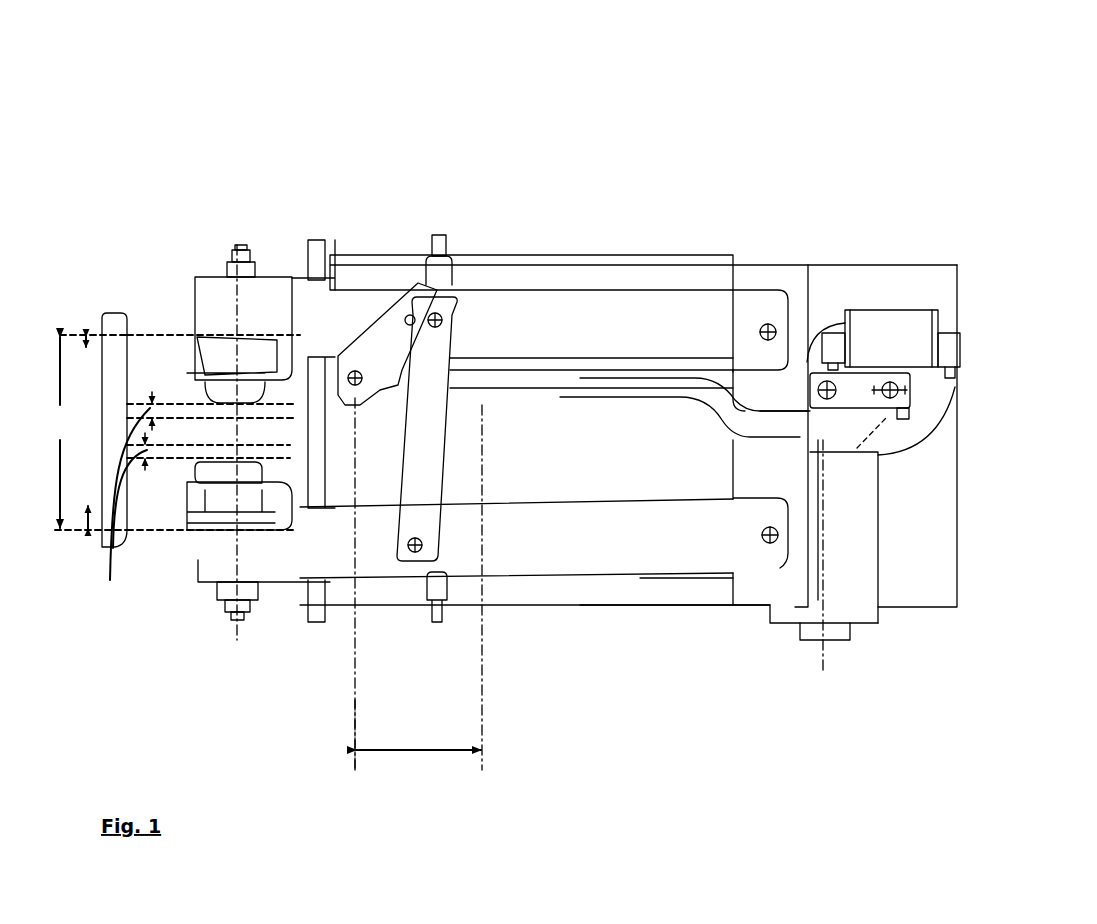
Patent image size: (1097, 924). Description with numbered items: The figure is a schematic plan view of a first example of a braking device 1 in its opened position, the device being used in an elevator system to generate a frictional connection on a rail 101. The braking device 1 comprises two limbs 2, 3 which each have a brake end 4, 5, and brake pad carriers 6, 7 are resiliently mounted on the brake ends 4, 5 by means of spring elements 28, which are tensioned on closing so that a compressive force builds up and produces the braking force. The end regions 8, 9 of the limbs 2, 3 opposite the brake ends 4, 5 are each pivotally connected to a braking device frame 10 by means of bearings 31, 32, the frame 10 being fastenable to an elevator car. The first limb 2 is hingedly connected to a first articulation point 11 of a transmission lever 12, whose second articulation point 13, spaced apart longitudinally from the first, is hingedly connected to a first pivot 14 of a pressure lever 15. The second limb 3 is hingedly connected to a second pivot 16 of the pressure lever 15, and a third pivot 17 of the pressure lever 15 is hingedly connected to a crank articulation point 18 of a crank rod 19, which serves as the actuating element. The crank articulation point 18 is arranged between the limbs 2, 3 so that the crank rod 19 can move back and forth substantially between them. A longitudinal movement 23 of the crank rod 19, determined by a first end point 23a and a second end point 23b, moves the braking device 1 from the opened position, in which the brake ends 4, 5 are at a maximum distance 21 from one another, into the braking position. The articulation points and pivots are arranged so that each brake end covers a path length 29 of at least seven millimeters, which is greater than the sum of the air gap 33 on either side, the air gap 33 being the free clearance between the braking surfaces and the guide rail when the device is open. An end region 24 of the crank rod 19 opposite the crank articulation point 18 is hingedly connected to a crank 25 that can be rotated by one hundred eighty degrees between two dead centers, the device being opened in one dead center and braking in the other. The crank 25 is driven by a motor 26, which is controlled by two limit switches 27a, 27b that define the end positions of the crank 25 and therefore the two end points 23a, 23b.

The braking device 1 is at (238, 85).
The first limb 2 is at (611, 540).
The second limb 3 is at (585, 328).
The brake end 4 is at (185, 248).
The brake end 5 is at (222, 606).
The brake pad carrier 6 is at (215, 397).
The brake pad carrier 7 is at (233, 482).
The end region 8 is at (773, 275).
The end region 9 is at (746, 602).
The braking device frame 10 is at (802, 280).
The first articulation point 11 is at (415, 545).
The transmission lever 12 is at (432, 430).
The second articulation point 13 is at (440, 318).
The first pivot 14 is at (438, 298).
The pressure lever 15 is at (380, 335).
The second pivot 16 is at (407, 320).
The third pivot 17 is at (352, 372).
The crank articulation point 18 is at (353, 402).
The crank rod 19 is at (625, 385).
The maximum distance 21 is at (58, 432).
The longitudinal movement 23 is at (418, 741).
The first end point 23a is at (355, 754).
The second end point 23b is at (482, 606).
The end region 24 is at (815, 412).
The crank 25 is at (851, 393).
The motor 26 is at (853, 565).
The limit switch 27a is at (838, 345).
The limit switch 27b is at (951, 345).
The spring element 28 is at (235, 362).
The path length 29 is at (84, 342).
The bearing 31 is at (770, 540).
The bearing 32 is at (768, 332).
The air gap 33 is at (122, 511).
The rail 101 is at (112, 325).